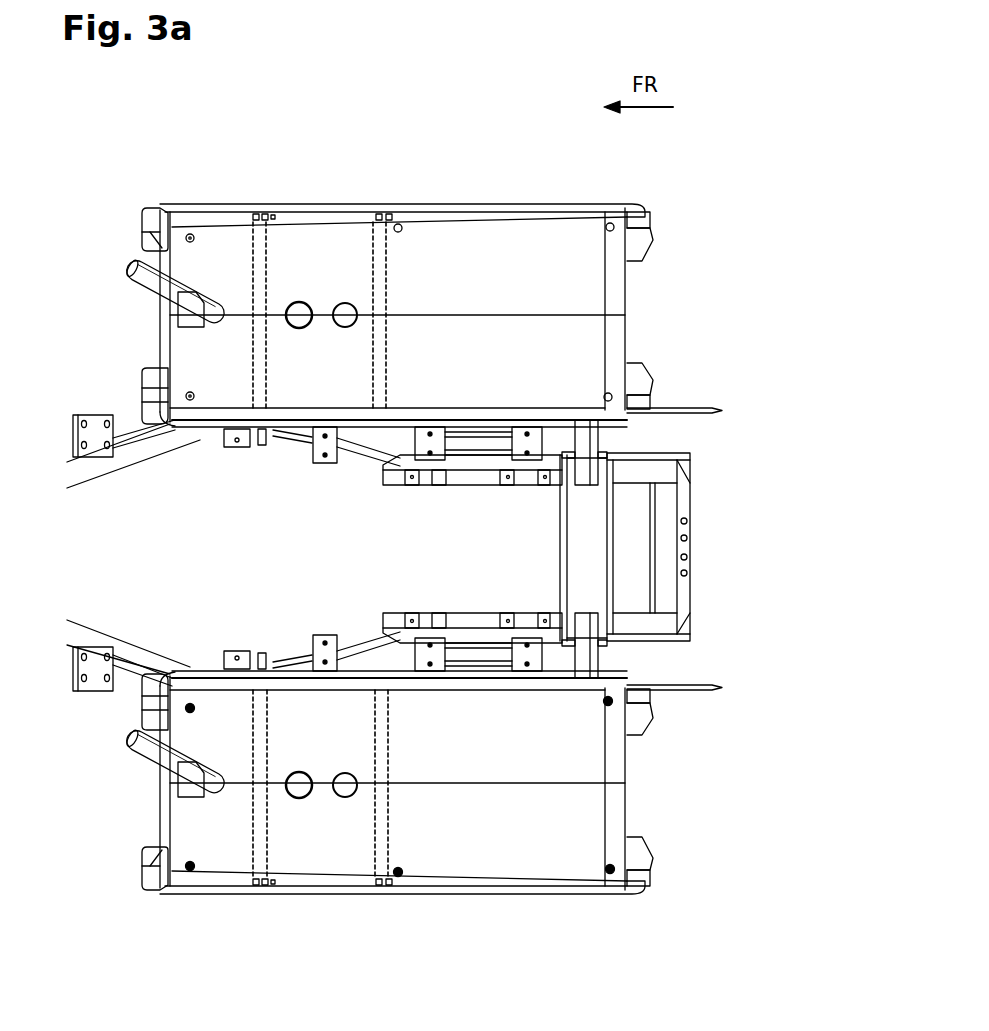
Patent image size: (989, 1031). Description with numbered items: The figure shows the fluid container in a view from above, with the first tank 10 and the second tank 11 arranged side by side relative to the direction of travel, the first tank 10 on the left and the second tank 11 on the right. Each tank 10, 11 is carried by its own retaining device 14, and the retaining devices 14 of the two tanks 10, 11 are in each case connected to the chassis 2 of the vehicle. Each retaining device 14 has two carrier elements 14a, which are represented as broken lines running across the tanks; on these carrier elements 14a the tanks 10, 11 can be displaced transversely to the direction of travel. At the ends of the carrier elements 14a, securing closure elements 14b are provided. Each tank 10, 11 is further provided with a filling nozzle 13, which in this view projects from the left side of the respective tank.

The chassis 2 is at (103, 643).
The first tank 10 is at (600, 900).
The second tank 11 is at (612, 192).
The filling nozzle 13 is at (160, 283).
The retaining device 14 is at (375, 465).
The carrier element 14a is at (258, 248).
The securing closure element 14b is at (255, 215).